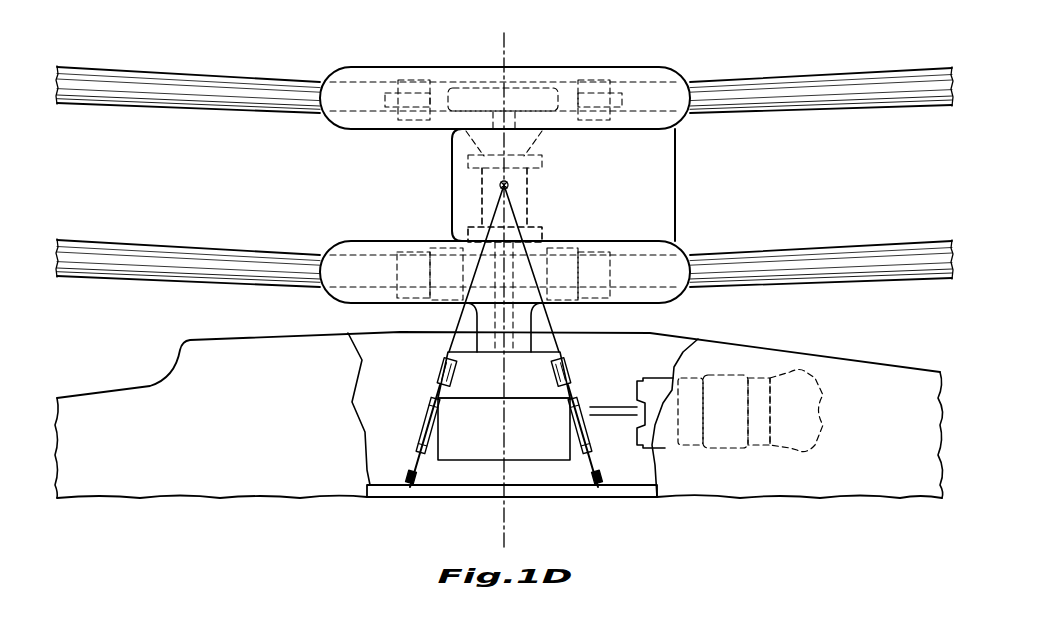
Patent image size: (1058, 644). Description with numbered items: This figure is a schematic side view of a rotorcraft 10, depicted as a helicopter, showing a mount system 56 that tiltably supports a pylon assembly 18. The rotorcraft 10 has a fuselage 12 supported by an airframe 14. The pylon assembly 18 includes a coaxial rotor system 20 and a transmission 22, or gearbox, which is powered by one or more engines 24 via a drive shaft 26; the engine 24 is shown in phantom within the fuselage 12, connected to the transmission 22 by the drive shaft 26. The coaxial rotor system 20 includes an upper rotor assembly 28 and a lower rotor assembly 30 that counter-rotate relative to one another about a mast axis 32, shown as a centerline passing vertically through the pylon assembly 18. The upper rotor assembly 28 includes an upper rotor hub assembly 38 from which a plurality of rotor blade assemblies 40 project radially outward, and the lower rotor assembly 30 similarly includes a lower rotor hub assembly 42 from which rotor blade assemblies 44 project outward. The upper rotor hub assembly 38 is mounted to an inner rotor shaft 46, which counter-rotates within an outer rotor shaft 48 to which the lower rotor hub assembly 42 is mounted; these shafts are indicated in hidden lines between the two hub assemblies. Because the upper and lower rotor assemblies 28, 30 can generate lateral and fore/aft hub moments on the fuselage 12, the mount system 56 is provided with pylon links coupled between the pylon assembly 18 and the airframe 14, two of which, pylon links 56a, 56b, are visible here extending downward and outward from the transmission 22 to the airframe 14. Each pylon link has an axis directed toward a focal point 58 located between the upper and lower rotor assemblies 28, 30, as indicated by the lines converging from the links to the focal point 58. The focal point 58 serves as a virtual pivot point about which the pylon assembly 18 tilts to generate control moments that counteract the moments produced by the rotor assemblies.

The rotorcraft 10 is at (504, 145).
The fuselage 12 is at (825, 365).
The airframe 14 is at (611, 497).
The pylon assembly 18 is at (440, 351).
The coaxial rotor system 20 is at (505, 178).
The transmission 22 is at (518, 443).
The engine 24 is at (736, 375).
The drive shaft 26 is at (598, 408).
The upper rotor assembly 28 is at (669, 62).
The lower rotor assembly 30 is at (688, 245).
The mast axis 32 is at (505, 45).
The upper rotor hub assembly 38 is at (382, 67).
The rotor blade assemblies 40 is at (827, 82).
The lower rotor hub assembly 42 is at (365, 245).
The rotor blade assemblies 44 is at (830, 250).
The inner rotor shaft 46 is at (490, 176).
The outer rotor shaft 48 is at (527, 200).
The mount system 56 is at (504, 436).
The pylon link 56a is at (620, 445).
The pylon link 56b is at (385, 450).
The focal point 58 is at (504, 185).